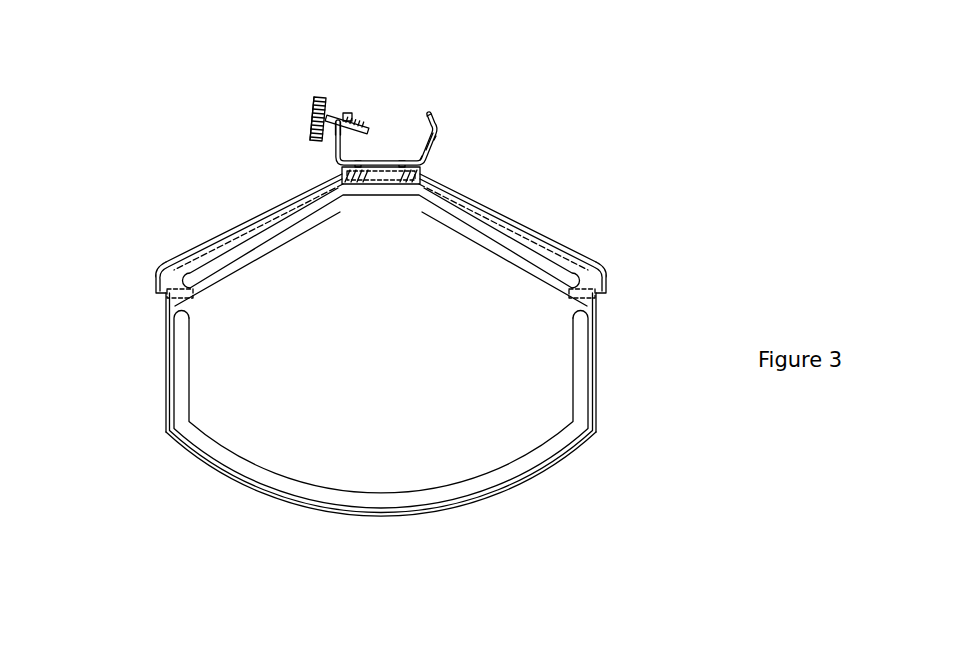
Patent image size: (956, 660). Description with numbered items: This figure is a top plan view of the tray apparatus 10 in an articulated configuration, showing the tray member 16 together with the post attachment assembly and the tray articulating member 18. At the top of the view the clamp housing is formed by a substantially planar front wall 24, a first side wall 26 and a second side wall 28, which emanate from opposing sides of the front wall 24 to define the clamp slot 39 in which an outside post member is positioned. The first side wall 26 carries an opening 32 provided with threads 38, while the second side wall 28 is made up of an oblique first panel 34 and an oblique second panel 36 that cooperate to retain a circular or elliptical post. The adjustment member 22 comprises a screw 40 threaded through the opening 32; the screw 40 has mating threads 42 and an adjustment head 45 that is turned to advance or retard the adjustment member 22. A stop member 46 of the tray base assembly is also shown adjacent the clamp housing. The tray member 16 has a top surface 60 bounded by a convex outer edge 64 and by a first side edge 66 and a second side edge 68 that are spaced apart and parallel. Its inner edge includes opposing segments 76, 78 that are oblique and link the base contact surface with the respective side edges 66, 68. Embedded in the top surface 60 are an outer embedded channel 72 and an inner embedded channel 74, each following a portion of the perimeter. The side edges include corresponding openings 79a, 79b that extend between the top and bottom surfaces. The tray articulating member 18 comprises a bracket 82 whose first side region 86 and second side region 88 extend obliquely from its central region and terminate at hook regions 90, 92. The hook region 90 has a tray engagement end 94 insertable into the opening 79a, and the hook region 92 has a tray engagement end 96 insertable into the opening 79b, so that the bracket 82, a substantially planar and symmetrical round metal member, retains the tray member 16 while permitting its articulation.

The tray apparatus 10 is at (135, 446).
The tray member 16 is at (227, 477).
The tray articulating member 18 is at (190, 248).
The adjustment member 22 is at (292, 130).
The front wall 24 is at (411, 145).
The first side wall 26 is at (343, 143).
The second side wall 28 is at (443, 132).
The opening 32 is at (352, 112).
The oblique first panel 34 is at (437, 114).
The oblique second panel 36 is at (438, 146).
The threads 38 is at (368, 162).
The clamp slot 39 is at (420, 150).
The screw 40 is at (318, 98).
The mating threads 42 is at (338, 118).
The adjustment head 45 is at (310, 118).
The stop member 46 is at (340, 176).
The top surface 60 is at (458, 408).
The outer edge 64 is at (423, 514).
The first side edge 66 is at (165, 353).
The second side edge 68 is at (596, 377).
The outer embedded channel 72 is at (315, 494).
The inner embedded channel 74 is at (488, 227).
The opposing segment 76 is at (170, 276).
The opposing segment 78 is at (563, 260).
The opening 79a is at (166, 299).
The opening 79b is at (606, 293).
The bracket 82 is at (283, 204).
The first side region 86 is at (232, 226).
The second side region 88 is at (527, 228).
The hook region 90 is at (155, 287).
The hook region 92 is at (607, 276).
The tray engagement end 94 is at (165, 297).
The tray engagement end 96 is at (597, 298).